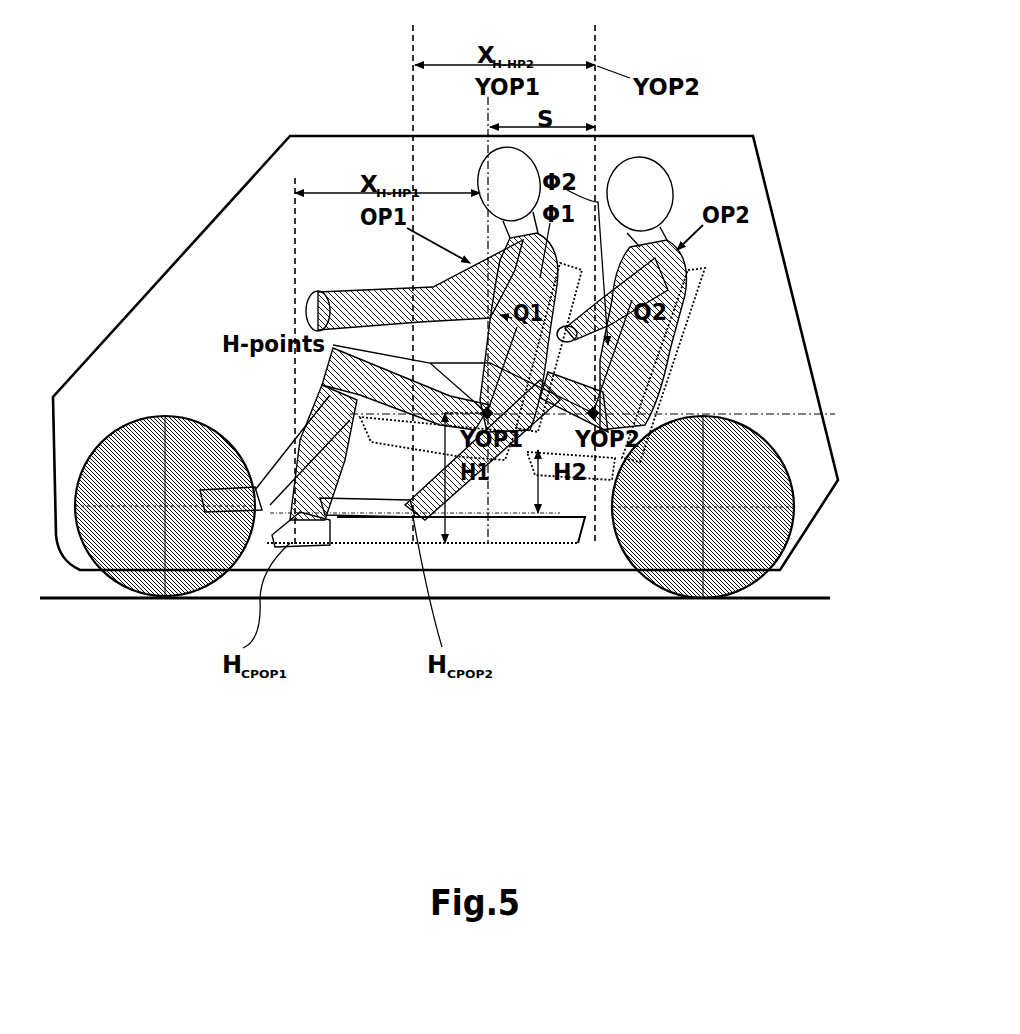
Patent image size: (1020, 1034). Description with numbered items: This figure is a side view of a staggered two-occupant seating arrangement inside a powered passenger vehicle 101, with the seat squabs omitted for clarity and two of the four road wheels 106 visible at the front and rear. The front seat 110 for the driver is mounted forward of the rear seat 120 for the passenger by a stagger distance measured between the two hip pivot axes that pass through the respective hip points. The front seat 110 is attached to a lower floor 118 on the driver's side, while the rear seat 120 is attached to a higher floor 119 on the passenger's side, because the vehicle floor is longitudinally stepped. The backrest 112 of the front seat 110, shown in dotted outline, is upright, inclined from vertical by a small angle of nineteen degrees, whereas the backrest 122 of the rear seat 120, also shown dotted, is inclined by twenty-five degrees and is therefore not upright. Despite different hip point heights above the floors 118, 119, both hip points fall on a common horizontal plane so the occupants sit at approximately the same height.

The powered passenger vehicle 101 is at (317, 132).
The road wheels 106 is at (133, 590).
The front seat 110 is at (373, 442).
The backrest 112 is at (578, 258).
The floor 118 is at (377, 543).
The floor 119 is at (553, 517).
The rear seat 120 is at (527, 455).
The backrest 122 is at (690, 270).